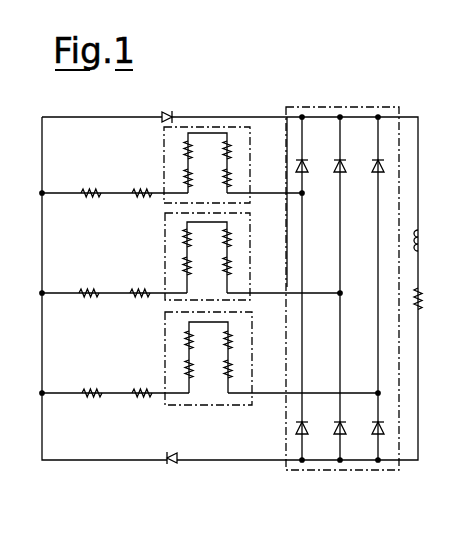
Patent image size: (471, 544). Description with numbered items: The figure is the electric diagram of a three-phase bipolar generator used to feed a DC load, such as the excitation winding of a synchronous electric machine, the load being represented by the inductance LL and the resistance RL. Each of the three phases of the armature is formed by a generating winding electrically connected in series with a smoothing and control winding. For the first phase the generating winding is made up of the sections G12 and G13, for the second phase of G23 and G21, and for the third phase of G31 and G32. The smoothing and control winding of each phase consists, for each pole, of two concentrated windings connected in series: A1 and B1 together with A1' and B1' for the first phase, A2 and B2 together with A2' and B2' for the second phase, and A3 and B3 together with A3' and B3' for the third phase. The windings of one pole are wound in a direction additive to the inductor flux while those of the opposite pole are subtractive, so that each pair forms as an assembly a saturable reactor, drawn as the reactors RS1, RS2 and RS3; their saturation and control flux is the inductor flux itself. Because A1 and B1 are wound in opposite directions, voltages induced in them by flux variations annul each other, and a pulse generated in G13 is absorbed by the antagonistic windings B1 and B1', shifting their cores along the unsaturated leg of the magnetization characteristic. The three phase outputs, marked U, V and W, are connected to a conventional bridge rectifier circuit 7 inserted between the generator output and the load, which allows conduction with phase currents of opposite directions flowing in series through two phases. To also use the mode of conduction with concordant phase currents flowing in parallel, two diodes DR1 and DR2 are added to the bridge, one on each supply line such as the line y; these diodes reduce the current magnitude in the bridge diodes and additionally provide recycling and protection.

The diode DR1 is at (167, 111).
The diode DR2 is at (172, 464).
The saturable reactor RS1 is at (163, 146).
The saturable reactor RS2 is at (165, 230).
The saturable reactor RS3 is at (165, 323).
The concentrated winding A1 is at (216, 137).
The concentrated winding A1' is at (204, 105).
The concentrated winding B1 is at (252, 173).
The concentrated winding B1' is at (252, 139).
The concentrated winding A2 is at (203, 276).
The concentrated winding A2' is at (160, 244).
The concentrated winding B2 is at (252, 268).
The concentrated winding B2' is at (252, 235).
The concentrated winding A3 is at (198, 399).
The concentrated winding A3' is at (215, 391).
The concentrated winding B3 is at (252, 375).
The concentrated winding B3' is at (252, 340).
The generating winding G12 is at (94, 189).
The generating winding G13 is at (146, 189).
The generating winding G23 is at (93, 289).
The generating winding G21 is at (142, 289).
The generating winding G31 is at (93, 389).
The generating winding G32 is at (146, 389).
The output terminal U is at (258, 194).
The output terminal V is at (260, 294).
The output terminal W is at (262, 394).
The bridge rectifier circuit 7 is at (325, 471).
The load inductance LL is at (421, 240).
The load resistance RL is at (424, 296).
The supply line y is at (57, 461).